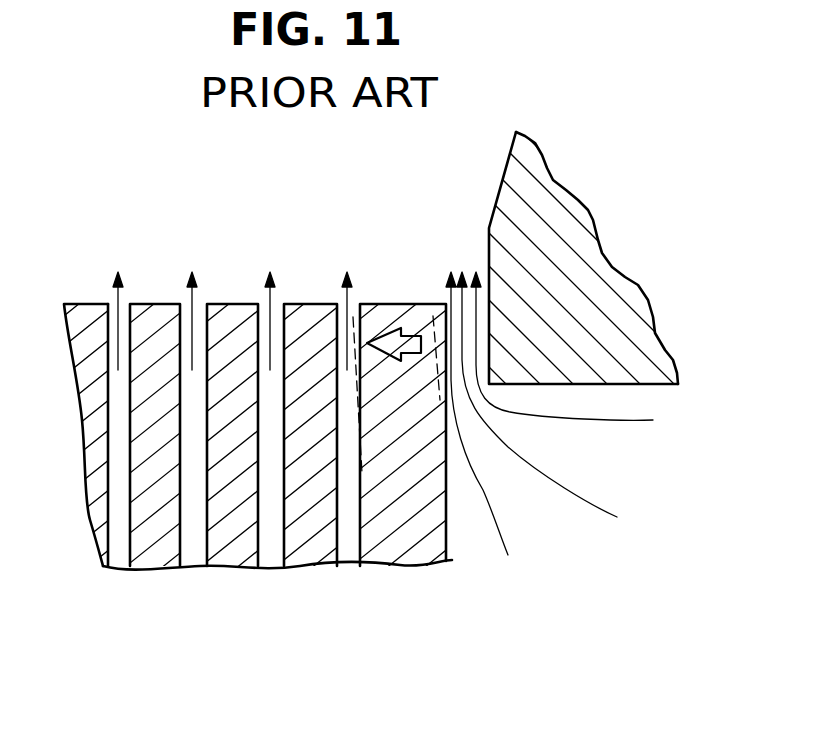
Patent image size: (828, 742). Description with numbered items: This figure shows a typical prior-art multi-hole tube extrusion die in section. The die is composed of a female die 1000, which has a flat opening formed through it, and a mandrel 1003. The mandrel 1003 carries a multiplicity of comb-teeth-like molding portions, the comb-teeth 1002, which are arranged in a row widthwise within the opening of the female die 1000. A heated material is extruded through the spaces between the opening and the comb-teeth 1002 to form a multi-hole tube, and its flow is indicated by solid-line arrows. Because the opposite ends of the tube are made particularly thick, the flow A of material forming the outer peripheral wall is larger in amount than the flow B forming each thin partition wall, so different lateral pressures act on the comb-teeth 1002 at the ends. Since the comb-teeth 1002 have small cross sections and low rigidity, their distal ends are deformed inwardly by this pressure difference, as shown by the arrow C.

The female die 1000 is at (570, 213).
The comb-teeth 1002 is at (152, 320).
The mandrel 1003 is at (247, 575).
The flow of material for forming the outer peripheral wall A is at (472, 472).
The flow of material for forming each partition wall B is at (352, 292).
The arrows indicating inward deformation of comb-teeth C is at (413, 331).